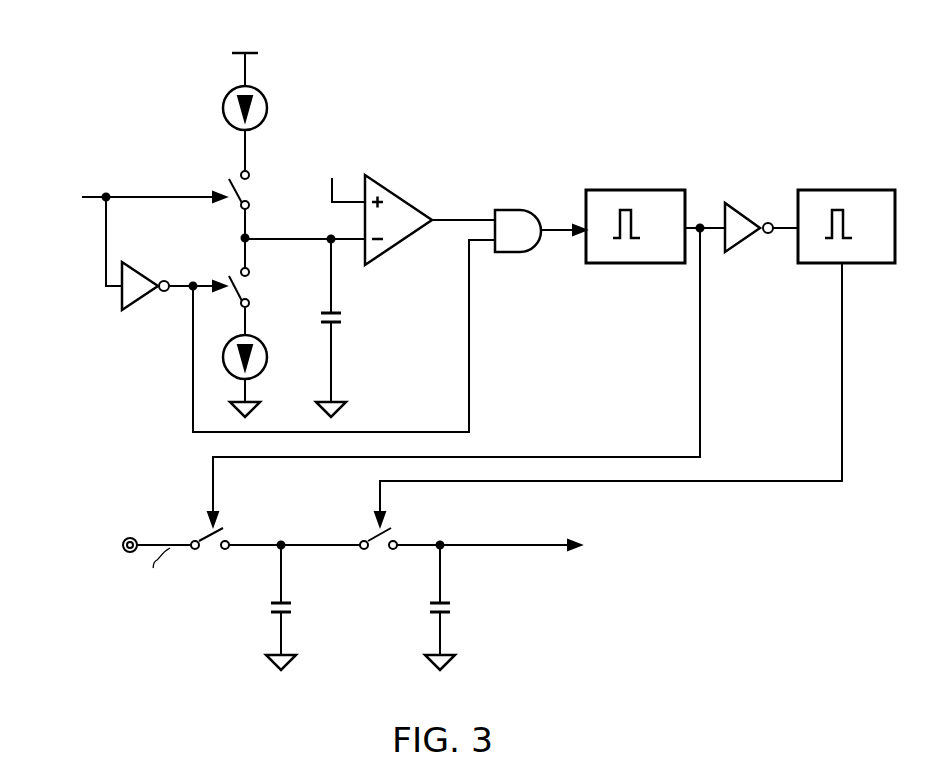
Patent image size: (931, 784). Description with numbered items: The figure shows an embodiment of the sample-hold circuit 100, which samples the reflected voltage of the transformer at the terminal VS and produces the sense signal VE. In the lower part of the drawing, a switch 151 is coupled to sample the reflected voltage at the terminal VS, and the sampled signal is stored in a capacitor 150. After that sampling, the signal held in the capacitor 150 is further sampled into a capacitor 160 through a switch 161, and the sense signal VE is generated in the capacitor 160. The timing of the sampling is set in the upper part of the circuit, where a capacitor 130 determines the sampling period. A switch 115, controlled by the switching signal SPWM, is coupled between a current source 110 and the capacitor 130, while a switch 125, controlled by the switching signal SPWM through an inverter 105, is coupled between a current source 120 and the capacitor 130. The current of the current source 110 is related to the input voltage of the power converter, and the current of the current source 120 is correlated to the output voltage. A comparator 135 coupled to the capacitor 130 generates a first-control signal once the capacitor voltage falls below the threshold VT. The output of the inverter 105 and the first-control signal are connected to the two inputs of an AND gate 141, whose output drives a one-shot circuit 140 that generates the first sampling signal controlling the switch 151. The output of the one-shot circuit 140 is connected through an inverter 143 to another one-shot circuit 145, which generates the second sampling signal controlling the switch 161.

The sample-hold circuit 100 is at (862, 93).
The inverter 105 is at (145, 275).
The current source 110 is at (222, 108).
The switch 115 is at (260, 190).
The current source 120 is at (266, 357).
The switch 125 is at (259, 287).
The capacitor 130 is at (353, 320).
The comparator 135 is at (398, 214).
The one-shot circuit 140 is at (635, 212).
The AND gate 141 is at (518, 216).
The inverter 143 is at (749, 217).
The one-shot circuit 145 is at (846, 212).
The capacitor 150 is at (304, 600).
The switch 151 is at (209, 554).
The capacitor 160 is at (465, 600).
The switch 161 is at (380, 554).